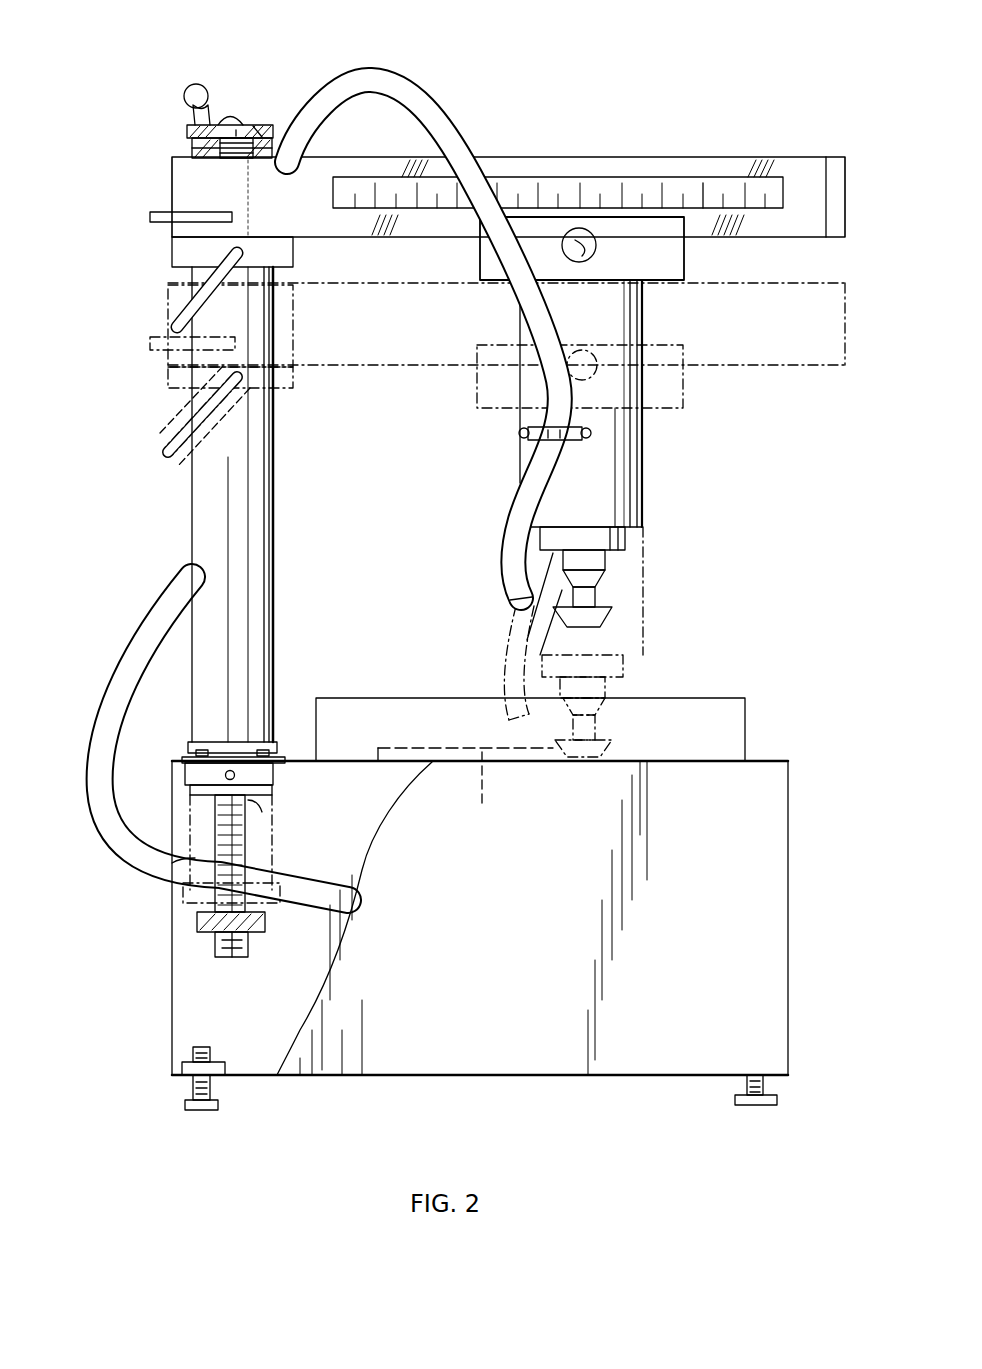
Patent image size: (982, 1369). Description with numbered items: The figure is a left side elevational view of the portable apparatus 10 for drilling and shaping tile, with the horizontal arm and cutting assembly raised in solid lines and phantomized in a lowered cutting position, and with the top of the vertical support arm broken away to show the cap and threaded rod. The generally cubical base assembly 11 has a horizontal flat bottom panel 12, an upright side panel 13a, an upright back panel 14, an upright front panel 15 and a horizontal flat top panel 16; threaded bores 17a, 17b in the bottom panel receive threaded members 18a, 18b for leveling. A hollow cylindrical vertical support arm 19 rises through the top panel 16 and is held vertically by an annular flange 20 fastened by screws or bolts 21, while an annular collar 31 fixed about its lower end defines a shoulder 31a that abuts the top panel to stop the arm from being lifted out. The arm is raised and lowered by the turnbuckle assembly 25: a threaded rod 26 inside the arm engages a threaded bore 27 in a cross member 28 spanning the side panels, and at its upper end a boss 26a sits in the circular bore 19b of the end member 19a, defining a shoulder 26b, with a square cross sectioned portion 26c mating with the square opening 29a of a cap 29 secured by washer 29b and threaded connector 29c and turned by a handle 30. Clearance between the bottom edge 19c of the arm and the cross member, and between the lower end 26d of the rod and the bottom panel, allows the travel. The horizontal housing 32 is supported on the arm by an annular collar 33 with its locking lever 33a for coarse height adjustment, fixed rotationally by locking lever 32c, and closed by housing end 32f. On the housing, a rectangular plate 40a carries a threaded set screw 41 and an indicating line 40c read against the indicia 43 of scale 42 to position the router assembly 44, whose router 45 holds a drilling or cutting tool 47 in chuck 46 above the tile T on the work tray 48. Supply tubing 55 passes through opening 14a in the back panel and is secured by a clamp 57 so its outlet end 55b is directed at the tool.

The portable apparatus 10 is at (705, 683).
The base assembly 11 is at (477, 911).
The horizontal flat bottom panel 12 is at (420, 1077).
The upright side panel 13a is at (702, 881).
The upright back panel 14 is at (172, 1018).
The opening in back panel 14a is at (178, 878).
The upright front panel 15 is at (788, 1000).
The horizontal flat top panel 16 is at (775, 760).
The threaded bore 17a is at (215, 1080).
The threaded bore 17b is at (765, 1078).
The threaded member 18a is at (190, 1102).
The threaded member 18b is at (745, 1098).
The vertical support arm 19 is at (258, 633).
The end member 19a is at (192, 148).
The circular bore 19b is at (243, 162).
The bottom edge of support arm 19c is at (268, 795).
The annular flange 20 is at (215, 745).
The screws or bolts 21 is at (265, 750).
The turnbuckle assembly 25 is at (183, 890).
The threaded rod 26 is at (245, 850).
The boss 26a is at (240, 140).
The shoulder 26b is at (205, 160).
The square cross sectioned portion 26c is at (262, 128).
The lower end of threaded rod 26d is at (200, 957).
The threaded bore 27 is at (246, 944).
The cross member 28 is at (264, 921).
The cap 29 is at (190, 130).
The square opening 29a is at (236, 125).
The washer 29b is at (205, 108).
The threaded connector 29c is at (228, 116).
The handle 30 is at (184, 97).
The annular collar 31 is at (272, 770).
The shoulder 31a is at (185, 760).
The horizontal housing 32 is at (803, 175).
The locking lever 32c is at (165, 216).
The housing end 32f is at (835, 195).
The annular collar 33 is at (190, 252).
The locking lever 33a is at (185, 310).
The rectangular plate 40a is at (684, 262).
The indicating line 40c is at (590, 232).
The threaded set screw 41 is at (580, 252).
The scale 42 is at (628, 182).
The indicia 43 is at (705, 188).
The router assembly 44 is at (650, 510).
The router 45 is at (628, 448).
The chuck 46 is at (585, 565).
The drilling or cutting tool 47 is at (585, 615).
The work tray 48 is at (413, 686).
The supply tubing 55 is at (450, 125).
The outlet end 55b is at (515, 600).
The clamp 57 is at (525, 437).
The tile T is at (481, 794).